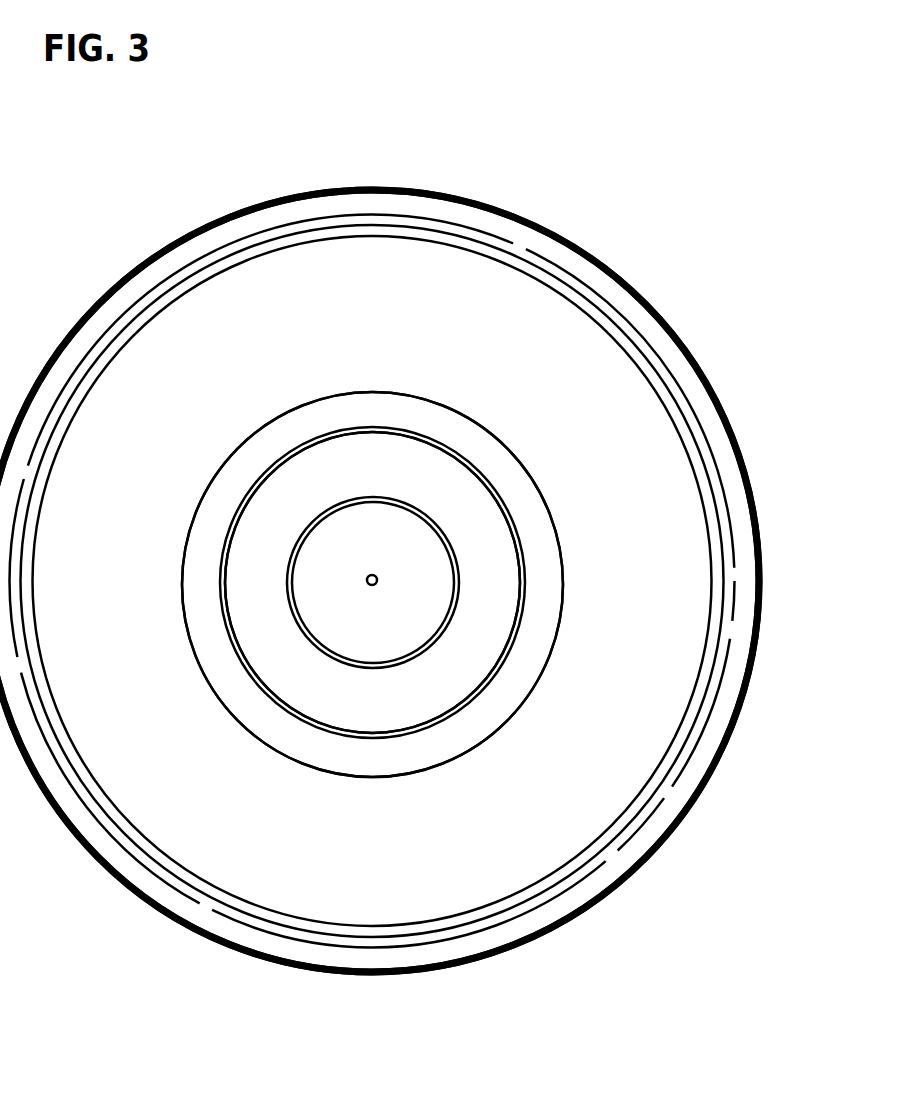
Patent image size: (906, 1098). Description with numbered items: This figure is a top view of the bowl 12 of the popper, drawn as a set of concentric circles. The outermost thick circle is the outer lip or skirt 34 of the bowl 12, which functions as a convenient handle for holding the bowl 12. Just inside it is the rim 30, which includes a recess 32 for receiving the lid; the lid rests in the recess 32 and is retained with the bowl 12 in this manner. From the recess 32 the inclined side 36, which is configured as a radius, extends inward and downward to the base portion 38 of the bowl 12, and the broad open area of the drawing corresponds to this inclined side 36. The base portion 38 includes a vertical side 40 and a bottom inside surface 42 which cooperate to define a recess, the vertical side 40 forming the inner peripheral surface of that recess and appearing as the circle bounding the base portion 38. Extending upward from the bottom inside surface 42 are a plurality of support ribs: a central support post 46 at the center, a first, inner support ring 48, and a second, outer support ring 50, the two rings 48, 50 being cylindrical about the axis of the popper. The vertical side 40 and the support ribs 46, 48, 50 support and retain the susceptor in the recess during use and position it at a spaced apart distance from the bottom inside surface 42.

The bowl 12 is at (180, 222).
The rim 30 is at (567, 283).
The recess 32 is at (320, 228).
The outer lip or skirt 34 is at (462, 200).
The inclined side 36 is at (660, 561).
The base portion 38 is at (478, 743).
The vertical side 40 is at (343, 392).
The bottom inside surface 42 is at (266, 478).
The central support post 46 is at (376, 577).
The first, inner support ring 48 is at (460, 542).
The second, outer support ring 50 is at (500, 497).